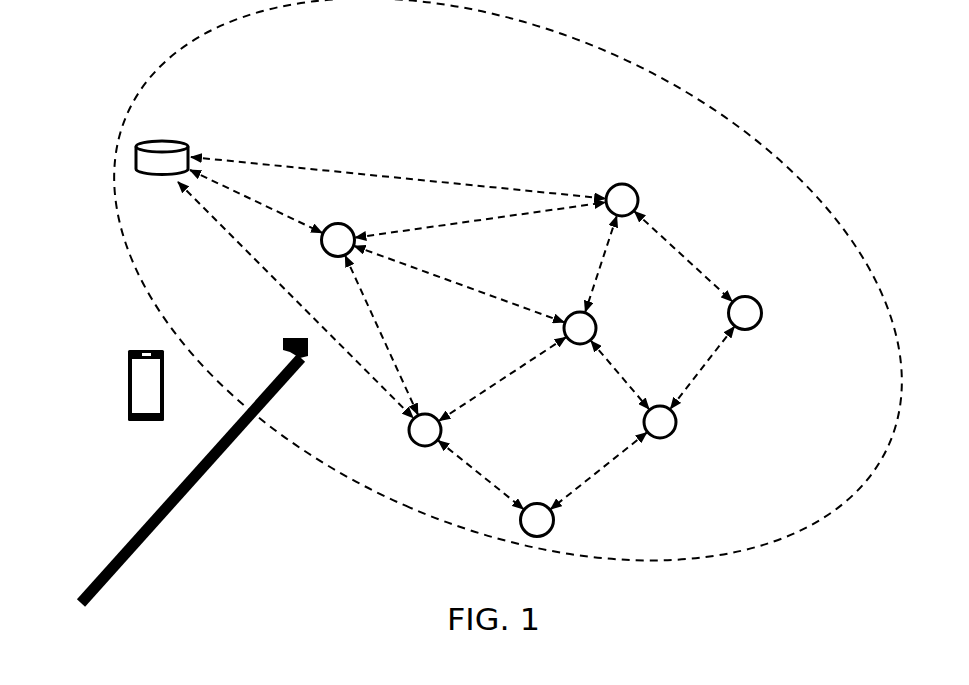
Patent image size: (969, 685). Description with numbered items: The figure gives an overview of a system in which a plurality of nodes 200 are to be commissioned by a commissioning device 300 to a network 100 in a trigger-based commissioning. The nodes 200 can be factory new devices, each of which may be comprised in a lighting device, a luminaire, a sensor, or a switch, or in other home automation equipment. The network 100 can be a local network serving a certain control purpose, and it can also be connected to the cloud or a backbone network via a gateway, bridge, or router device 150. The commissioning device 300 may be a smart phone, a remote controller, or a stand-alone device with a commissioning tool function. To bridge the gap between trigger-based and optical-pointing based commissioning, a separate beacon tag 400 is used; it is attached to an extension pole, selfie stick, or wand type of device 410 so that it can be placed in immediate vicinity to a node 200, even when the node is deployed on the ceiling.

The network 100 is at (147, 80).
The gateway 150 is at (184, 137).
The node 200 is at (531, 329).
The commissioning device 300 is at (125, 385).
The beacon tag 400 is at (285, 348).
The extension pole 410 is at (105, 567).